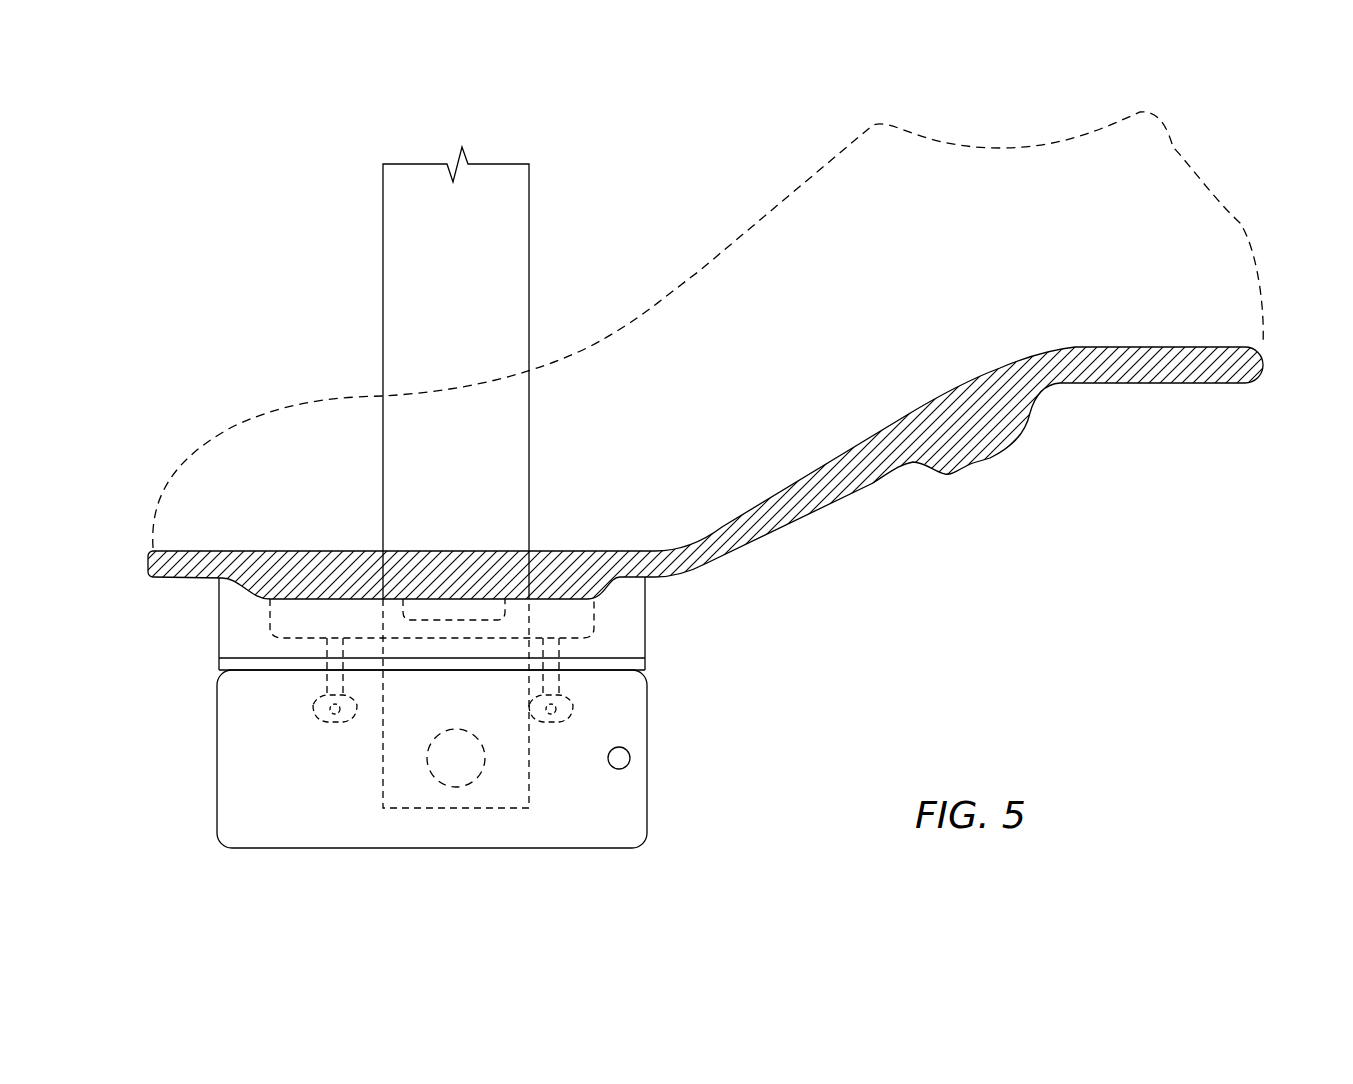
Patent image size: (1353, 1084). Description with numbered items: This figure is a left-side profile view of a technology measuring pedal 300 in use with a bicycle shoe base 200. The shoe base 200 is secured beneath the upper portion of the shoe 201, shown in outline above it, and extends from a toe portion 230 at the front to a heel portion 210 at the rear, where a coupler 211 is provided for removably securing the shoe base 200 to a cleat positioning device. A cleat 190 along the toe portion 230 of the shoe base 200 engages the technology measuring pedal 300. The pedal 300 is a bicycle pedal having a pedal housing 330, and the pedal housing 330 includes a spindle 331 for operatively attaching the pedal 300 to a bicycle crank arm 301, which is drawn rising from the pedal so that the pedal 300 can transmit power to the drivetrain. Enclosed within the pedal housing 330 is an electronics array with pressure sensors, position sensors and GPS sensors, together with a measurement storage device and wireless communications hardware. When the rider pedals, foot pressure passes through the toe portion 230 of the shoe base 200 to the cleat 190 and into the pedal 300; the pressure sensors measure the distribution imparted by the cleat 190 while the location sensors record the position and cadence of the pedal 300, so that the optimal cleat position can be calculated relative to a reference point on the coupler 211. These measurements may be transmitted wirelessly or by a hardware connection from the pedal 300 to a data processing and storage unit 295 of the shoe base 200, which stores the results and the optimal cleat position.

The cleat 190 is at (408, 607).
The shoe base 200 is at (810, 510).
The shoe 201 is at (1238, 225).
The heel portion 210 is at (972, 492).
The coupler 211 is at (997, 437).
The toe portion 230 is at (330, 861).
The data processing and storage unit 295 is at (570, 588).
The technology measuring pedal 300 is at (158, 630).
The bicycle crank arm 301 is at (517, 248).
The pedal housing 330 is at (672, 860).
The spindle 331 is at (458, 768).